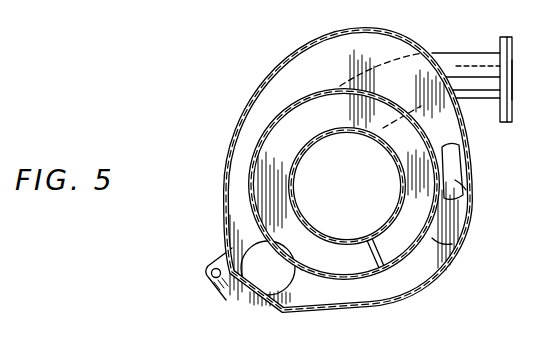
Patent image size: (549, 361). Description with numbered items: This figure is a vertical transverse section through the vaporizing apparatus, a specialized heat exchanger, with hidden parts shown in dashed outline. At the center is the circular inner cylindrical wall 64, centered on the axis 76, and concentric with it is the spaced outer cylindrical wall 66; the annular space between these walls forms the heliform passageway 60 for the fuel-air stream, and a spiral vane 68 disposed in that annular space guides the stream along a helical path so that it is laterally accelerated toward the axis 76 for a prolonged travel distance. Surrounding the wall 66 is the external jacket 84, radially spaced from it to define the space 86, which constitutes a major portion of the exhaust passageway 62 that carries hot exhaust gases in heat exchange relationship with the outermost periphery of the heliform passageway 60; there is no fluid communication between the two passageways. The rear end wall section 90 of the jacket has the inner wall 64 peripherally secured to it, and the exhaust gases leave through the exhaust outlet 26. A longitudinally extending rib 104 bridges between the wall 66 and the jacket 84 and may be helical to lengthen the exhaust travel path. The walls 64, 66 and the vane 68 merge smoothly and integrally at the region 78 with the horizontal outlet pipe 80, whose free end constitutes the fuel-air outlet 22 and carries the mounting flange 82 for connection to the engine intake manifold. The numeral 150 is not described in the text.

The outlet 22 is at (512, 80).
The exhaust outlet 26 is at (283, 312).
The heliform passageway 60 is at (465, 187).
The exhaust passageway 62 is at (440, 242).
The inner cylindrical wall 64 is at (298, 158).
The outer cylindrical wall 66 is at (281, 113).
The spiral vane 68 is at (372, 252).
The axis 76 is at (347, 186).
The merge region 78 is at (340, 85).
The outlet pipe 80 is at (464, 60).
The mounting flange 82 is at (505, 40).
The external jacket 84 is at (348, 170).
The space 86 is at (278, 103).
The rear end wall section 90 is at (228, 233).
The longitudinally extending rib 104 is at (447, 139).
The base 150 is at (2, 359).